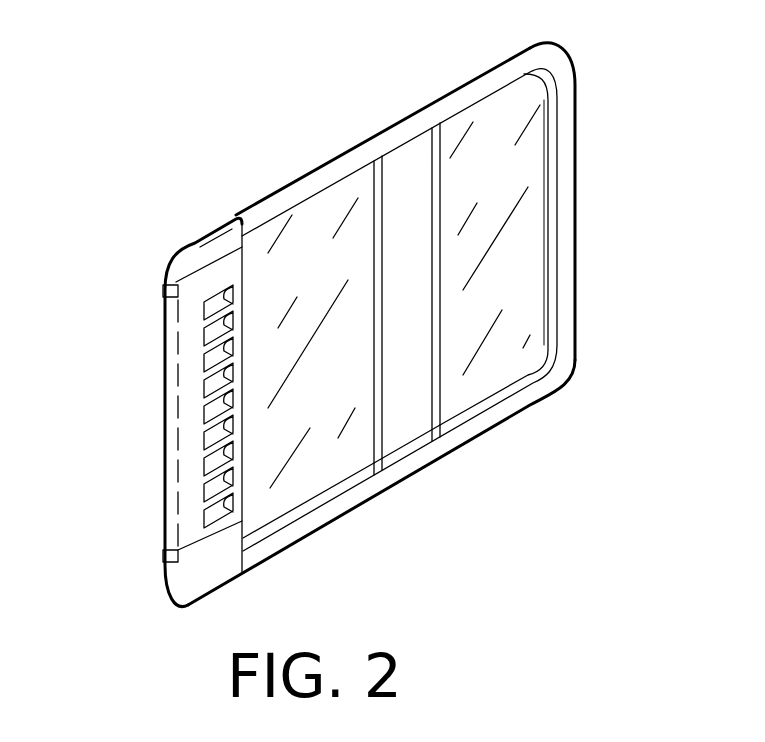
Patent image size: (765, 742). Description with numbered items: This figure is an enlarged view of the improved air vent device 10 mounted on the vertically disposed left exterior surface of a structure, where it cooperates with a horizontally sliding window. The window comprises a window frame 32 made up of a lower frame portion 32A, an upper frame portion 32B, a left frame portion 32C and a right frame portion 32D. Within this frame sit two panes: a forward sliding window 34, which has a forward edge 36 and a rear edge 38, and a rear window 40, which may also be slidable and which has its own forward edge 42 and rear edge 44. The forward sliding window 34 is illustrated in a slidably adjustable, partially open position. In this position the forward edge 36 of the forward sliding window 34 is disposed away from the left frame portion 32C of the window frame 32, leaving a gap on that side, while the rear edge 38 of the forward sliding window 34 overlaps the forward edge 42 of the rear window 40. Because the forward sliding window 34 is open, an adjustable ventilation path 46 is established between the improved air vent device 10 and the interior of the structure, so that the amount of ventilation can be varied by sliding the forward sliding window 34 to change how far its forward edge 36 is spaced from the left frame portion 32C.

The improved air vent device 10 is at (178, 485).
The window frame 32 is at (575, 363).
The lower frame portion 32A is at (550, 397).
The upper frame portion 32B is at (457, 113).
The left frame portion 32C is at (178, 443).
The right frame portion 32D is at (575, 295).
The forward sliding window 34 is at (322, 457).
The forward edge 36 is at (238, 390).
The rear edge 38 is at (440, 388).
The rear window 40 is at (525, 140).
The forward edge 42 is at (373, 215).
The rear edge 44 is at (572, 240).
The adjustable ventilation path 46 is at (197, 288).